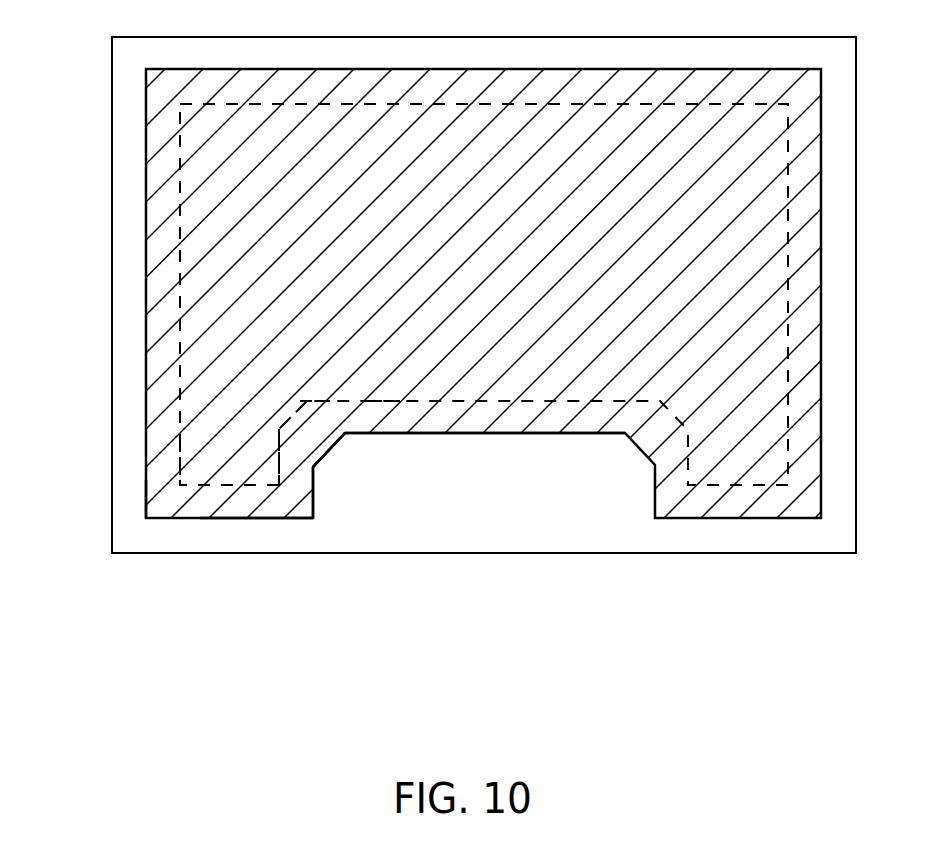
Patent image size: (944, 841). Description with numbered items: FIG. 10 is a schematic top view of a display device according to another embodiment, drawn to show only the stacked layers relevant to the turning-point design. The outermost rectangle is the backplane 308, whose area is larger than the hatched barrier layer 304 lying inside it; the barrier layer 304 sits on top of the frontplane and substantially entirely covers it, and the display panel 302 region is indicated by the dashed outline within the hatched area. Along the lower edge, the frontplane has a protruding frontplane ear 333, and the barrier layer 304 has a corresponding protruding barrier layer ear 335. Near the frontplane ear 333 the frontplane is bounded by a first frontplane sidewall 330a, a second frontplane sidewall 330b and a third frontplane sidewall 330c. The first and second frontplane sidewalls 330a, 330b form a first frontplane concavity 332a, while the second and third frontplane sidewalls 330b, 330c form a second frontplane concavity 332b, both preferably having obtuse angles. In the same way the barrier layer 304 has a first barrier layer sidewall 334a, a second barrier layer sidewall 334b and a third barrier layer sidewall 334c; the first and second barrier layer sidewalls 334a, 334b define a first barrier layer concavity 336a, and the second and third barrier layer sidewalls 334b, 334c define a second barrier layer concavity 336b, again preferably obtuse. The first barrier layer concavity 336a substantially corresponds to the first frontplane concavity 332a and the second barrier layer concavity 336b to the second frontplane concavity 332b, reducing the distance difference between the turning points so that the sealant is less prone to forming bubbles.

The backplane 308 is at (500, 64).
The barrier layer 304 is at (500, 97).
The display panel 302 is at (500, 267).
The first frontplane sidewall 330a is at (383, 400).
The second frontplane sidewall 330b is at (281, 436).
The third frontplane sidewall 330c is at (248, 518).
The first frontplane concavity 332a is at (311, 384).
The second frontplane concavity 332b is at (260, 433).
The frontplane ear 333 is at (165, 461).
The barrier layer ear 335 is at (133, 512).
The first barrier layer sidewall 334a is at (434, 435).
The second barrier layer sidewall 334b is at (358, 454).
The third barrier layer sidewall 334c is at (321, 479).
The first barrier layer concavity 336a is at (364, 450).
The second barrier layer concavity 336b is at (329, 475).